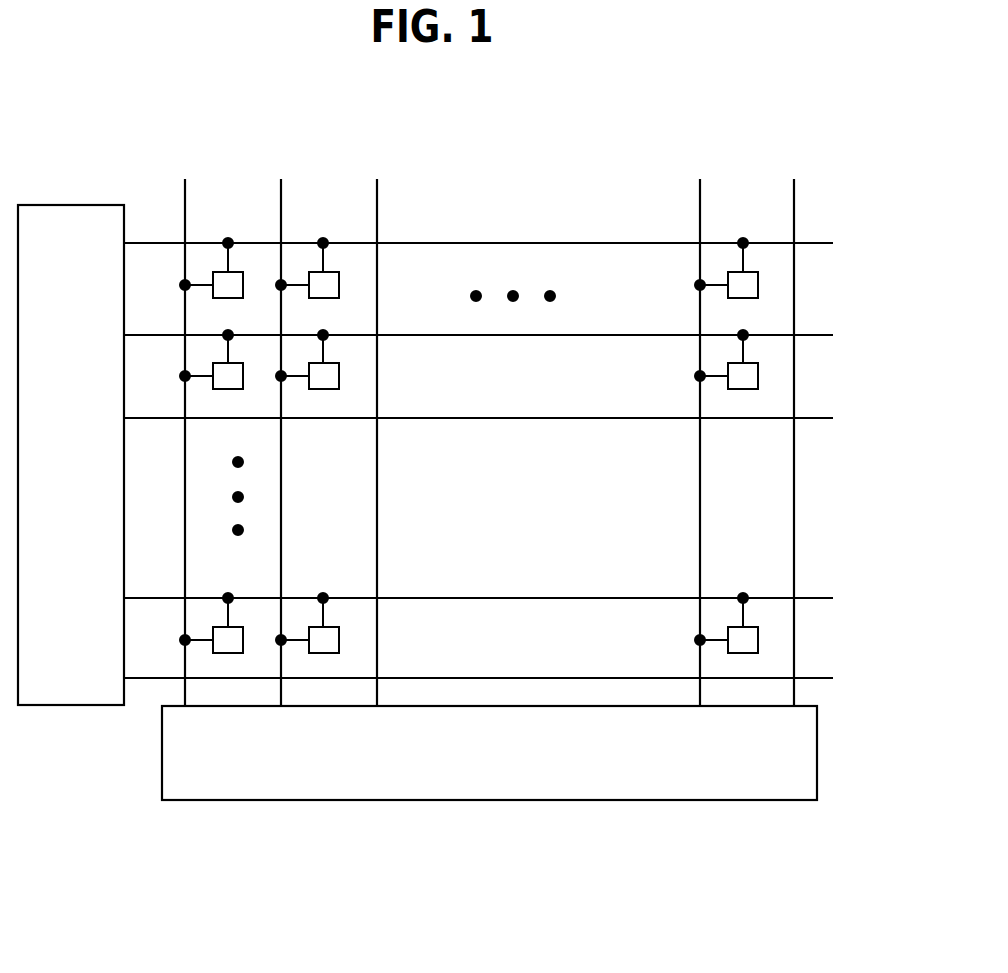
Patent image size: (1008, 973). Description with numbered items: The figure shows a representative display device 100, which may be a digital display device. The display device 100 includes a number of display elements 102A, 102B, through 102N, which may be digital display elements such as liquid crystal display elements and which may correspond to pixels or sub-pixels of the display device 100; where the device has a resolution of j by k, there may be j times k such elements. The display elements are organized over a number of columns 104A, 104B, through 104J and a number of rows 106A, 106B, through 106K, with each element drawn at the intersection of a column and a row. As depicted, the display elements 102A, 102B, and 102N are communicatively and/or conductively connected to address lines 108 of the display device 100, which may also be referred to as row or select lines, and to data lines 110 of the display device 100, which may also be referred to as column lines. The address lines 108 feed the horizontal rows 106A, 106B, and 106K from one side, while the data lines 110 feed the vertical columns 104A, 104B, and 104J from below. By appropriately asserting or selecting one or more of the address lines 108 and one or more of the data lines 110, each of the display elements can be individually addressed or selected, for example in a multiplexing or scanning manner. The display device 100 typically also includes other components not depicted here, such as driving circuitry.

The display device 100 is at (181, 858).
The display element 102A is at (216, 298).
The display element 102B is at (312, 298).
The display element 102N is at (731, 653).
The column 104A is at (228, 197).
The column 104B is at (323, 197).
The column 104J is at (752, 197).
The row 106A is at (817, 287).
The row 106B is at (817, 375).
The row 106K is at (817, 638).
The address lines 108 is at (82, 205).
The data lines 110 is at (718, 802).